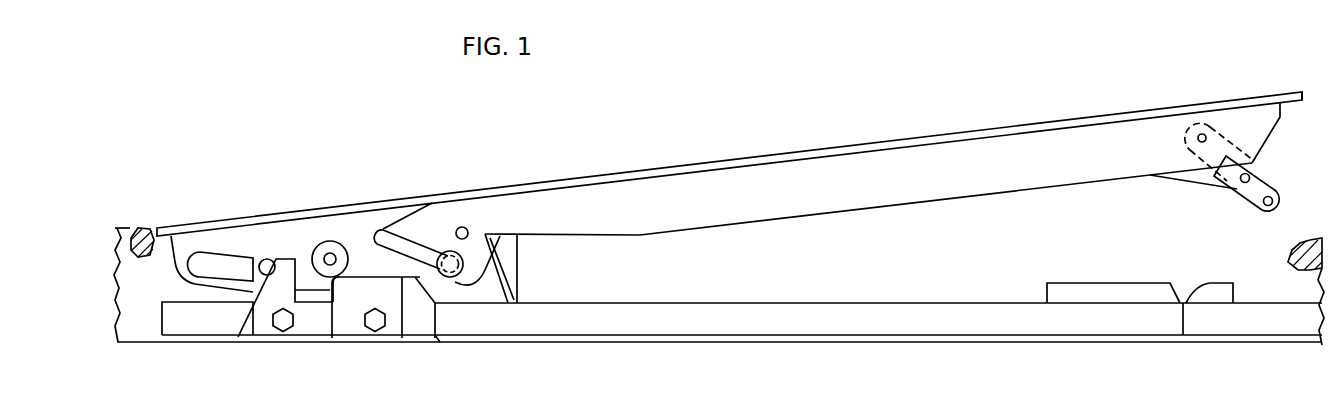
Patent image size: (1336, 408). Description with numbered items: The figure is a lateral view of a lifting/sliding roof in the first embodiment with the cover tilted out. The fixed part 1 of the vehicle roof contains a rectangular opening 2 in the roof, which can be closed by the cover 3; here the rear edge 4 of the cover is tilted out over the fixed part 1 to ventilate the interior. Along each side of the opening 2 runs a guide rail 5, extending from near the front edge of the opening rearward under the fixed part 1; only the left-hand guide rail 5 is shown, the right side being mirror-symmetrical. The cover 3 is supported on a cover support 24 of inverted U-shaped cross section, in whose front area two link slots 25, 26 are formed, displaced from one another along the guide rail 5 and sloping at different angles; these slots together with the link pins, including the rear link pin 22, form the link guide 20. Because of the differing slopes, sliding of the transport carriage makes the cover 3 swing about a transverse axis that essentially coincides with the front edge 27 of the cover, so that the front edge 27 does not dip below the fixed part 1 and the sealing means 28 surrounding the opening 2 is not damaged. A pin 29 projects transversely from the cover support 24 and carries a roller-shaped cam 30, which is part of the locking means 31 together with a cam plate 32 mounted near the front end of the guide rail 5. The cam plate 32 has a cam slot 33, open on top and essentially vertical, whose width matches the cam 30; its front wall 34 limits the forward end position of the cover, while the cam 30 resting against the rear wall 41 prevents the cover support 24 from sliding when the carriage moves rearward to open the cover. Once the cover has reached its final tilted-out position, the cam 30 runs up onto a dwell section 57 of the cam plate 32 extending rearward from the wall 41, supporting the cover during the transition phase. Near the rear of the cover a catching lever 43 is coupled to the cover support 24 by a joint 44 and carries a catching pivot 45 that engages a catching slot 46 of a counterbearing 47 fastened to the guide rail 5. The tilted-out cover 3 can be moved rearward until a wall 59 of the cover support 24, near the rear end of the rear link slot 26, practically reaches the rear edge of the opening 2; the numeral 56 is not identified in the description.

The fixed part of the roof 1 is at (1313, 240).
The opening in the roof 2 is at (1137, 251).
The cover 3 is at (944, 134).
The rear edge of the cover 4 is at (1300, 92).
The guide rail 5 is at (885, 313).
The link guide 20 is at (366, 229).
The rear link pin 22 is at (451, 278).
The cover support 24 is at (718, 185).
The front link slot 25 is at (222, 258).
The rear link slot 26 is at (402, 245).
The front edge of the cover 27 is at (153, 226).
The sealing means 28 is at (1296, 240).
The pin 29 is at (330, 253).
The cam 30 is at (341, 243).
The locking means 31 is at (312, 346).
The cam plate 32 is at (352, 322).
The cam slot 33 is at (300, 305).
The front wall of the cam slot 34 is at (301, 272).
The rear wall of the cam slot 41 is at (326, 302).
The catching lever 43 is at (1270, 180).
The joint 44 is at (1202, 133).
The catching pivot 45 is at (1258, 205).
The catching slot 46 is at (1183, 306).
The counterbearing 47 is at (1072, 297).
The stop 56 is at (1187, 297).
The dwell section 57 is at (398, 270).
The wall of the cover support 59 is at (522, 252).